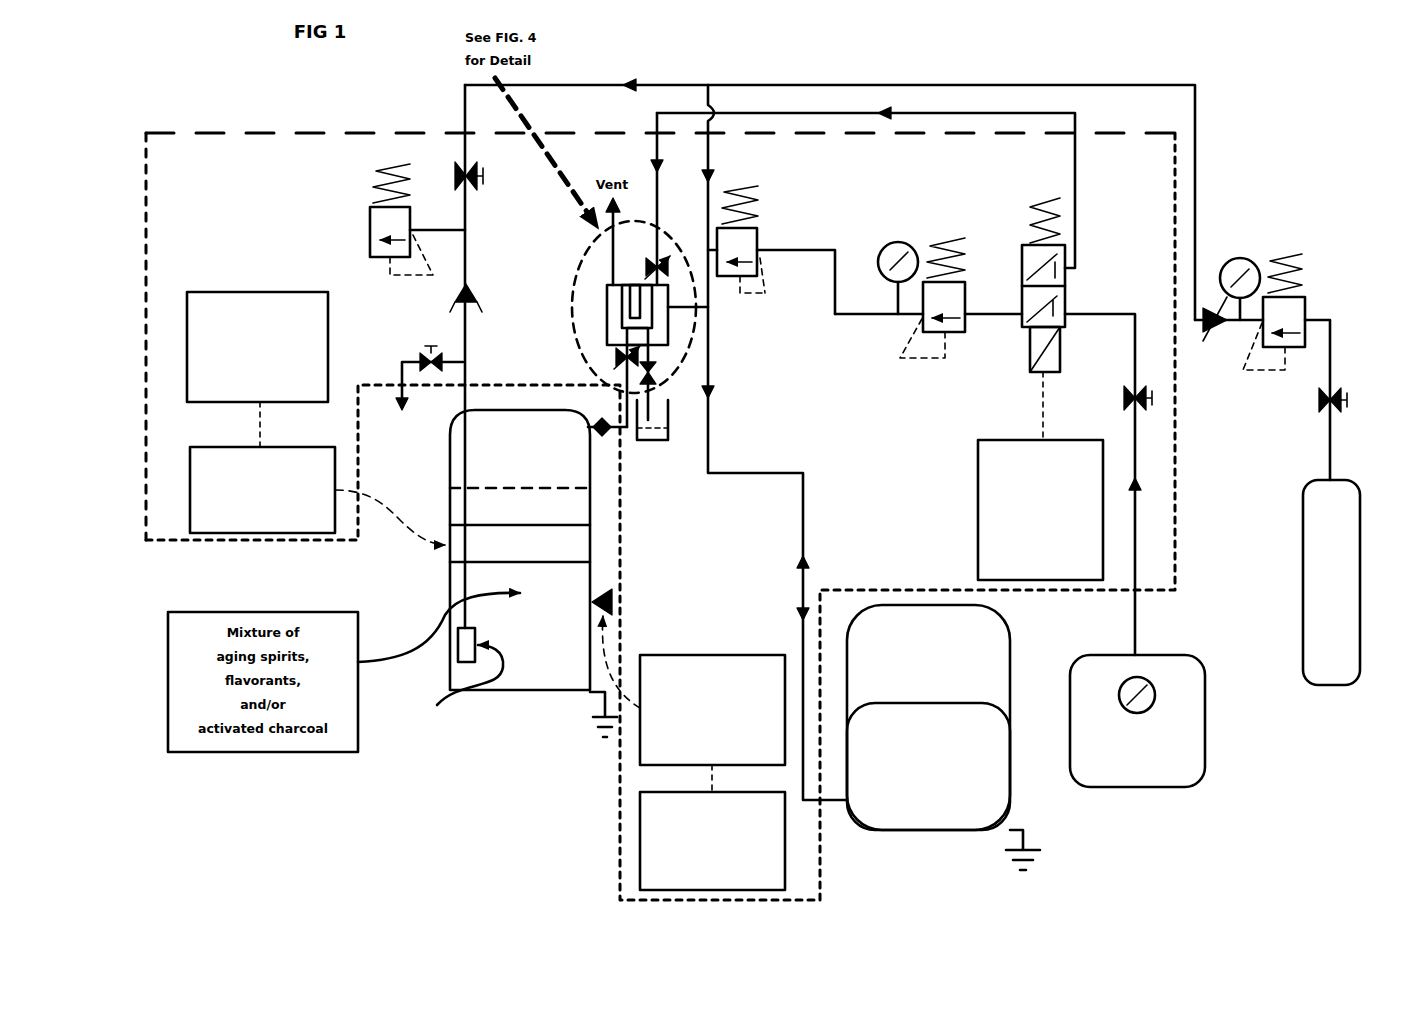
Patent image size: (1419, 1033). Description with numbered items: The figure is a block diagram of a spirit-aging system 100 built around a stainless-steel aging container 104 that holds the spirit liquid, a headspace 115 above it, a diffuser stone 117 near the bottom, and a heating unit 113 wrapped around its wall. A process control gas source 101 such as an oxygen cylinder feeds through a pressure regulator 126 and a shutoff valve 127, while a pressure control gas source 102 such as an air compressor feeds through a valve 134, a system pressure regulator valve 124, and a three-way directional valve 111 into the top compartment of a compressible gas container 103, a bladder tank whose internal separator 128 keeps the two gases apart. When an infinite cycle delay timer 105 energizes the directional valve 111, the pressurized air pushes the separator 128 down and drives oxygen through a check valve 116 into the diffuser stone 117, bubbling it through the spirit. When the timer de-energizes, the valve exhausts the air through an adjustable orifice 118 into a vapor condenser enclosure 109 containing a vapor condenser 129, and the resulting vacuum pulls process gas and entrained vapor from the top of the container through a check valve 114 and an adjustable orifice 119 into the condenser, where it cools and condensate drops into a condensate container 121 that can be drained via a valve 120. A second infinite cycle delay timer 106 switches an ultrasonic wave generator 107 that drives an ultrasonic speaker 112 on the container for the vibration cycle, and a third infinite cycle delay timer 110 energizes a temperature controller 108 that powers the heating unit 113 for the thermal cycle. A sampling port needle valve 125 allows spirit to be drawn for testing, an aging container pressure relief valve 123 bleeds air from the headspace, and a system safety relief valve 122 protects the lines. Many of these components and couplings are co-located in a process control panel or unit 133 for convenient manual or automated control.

The system 100 is at (170, 53).
The process control gas source 101 is at (1279, 556).
The pressure control gas source 102 is at (1171, 667).
The compressible gas container 103 is at (962, 737).
The aging container 104 is at (533, 538).
The infinite cycle delay timer 105 is at (999, 482).
The infinite cycle delay timer 106 is at (766, 827).
The ultrasonic wave generator 107 is at (712, 661).
The temperature controller 108 is at (297, 470).
The vapor condenser enclosure 109 is at (591, 265).
The infinite cycle delay timer 110 is at (253, 335).
The 3-way directional valve 111 is at (1091, 313).
The ultrasonic speaker 112 is at (659, 624).
The heating unit 113 is at (432, 554).
The check valve 114 is at (580, 410).
The headspace 115 is at (520, 475).
The check valve 116 is at (419, 298).
The diffuser stone 117 is at (456, 708).
The adjustable orifice 118 is at (670, 233).
The adjustable orifice 119 is at (581, 368).
The valve or drain 120 is at (714, 382).
The condensate container 121 is at (696, 442).
The system safety relief valve 122 is at (771, 230).
The aging container pressure relief valve 123 is at (362, 210).
The system pressure regulator valve 124 is at (937, 267).
The sampling port needle valve 125 is at (403, 399).
The pressure regulator 126 is at (1294, 340).
The process control gas source shutoff valve 127 is at (1353, 384).
The internal separator 128 is at (1057, 789).
The vapor condenser 129 is at (580, 293).
The process control panel or unit 133 is at (660, 484).
The valve 134 is at (1173, 398).